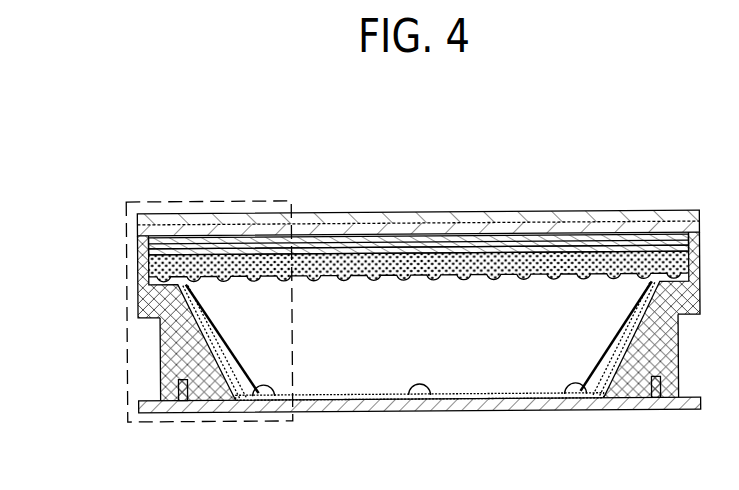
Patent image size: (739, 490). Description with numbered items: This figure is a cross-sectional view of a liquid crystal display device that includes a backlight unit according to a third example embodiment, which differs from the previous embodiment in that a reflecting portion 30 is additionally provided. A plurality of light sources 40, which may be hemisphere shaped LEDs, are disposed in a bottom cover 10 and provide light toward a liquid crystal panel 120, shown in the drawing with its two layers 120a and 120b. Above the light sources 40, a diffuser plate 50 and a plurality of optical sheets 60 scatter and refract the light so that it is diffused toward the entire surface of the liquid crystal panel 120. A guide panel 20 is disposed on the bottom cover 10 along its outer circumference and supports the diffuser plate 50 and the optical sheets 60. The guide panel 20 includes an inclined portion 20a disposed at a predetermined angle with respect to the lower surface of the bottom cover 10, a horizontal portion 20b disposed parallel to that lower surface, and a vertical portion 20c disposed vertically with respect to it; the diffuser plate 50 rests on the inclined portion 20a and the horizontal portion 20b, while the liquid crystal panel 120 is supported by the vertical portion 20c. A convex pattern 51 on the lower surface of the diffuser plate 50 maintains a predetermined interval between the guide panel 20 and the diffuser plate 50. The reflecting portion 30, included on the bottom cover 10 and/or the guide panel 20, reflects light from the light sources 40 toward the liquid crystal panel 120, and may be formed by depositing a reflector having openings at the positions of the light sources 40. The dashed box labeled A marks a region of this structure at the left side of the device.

The bottom cover 10 is at (318, 411).
The guide panel 20 is at (362, 282).
The inclined portion 20a is at (374, 357).
The horizontal portion 20b is at (137, 300).
The vertical portion 20c is at (378, 222).
The reflecting portion 30 is at (480, 399).
The light sources 40 is at (263, 396).
The diffuser plate 50 is at (527, 238).
The convex pattern 51 is at (600, 276).
The optical sheets 60 is at (477, 241).
The liquid crystal panel 120 is at (418, 178).
The first substrate 120a is at (352, 213).
The second substrate 120b is at (348, 155).
The detail region A is at (236, 200).